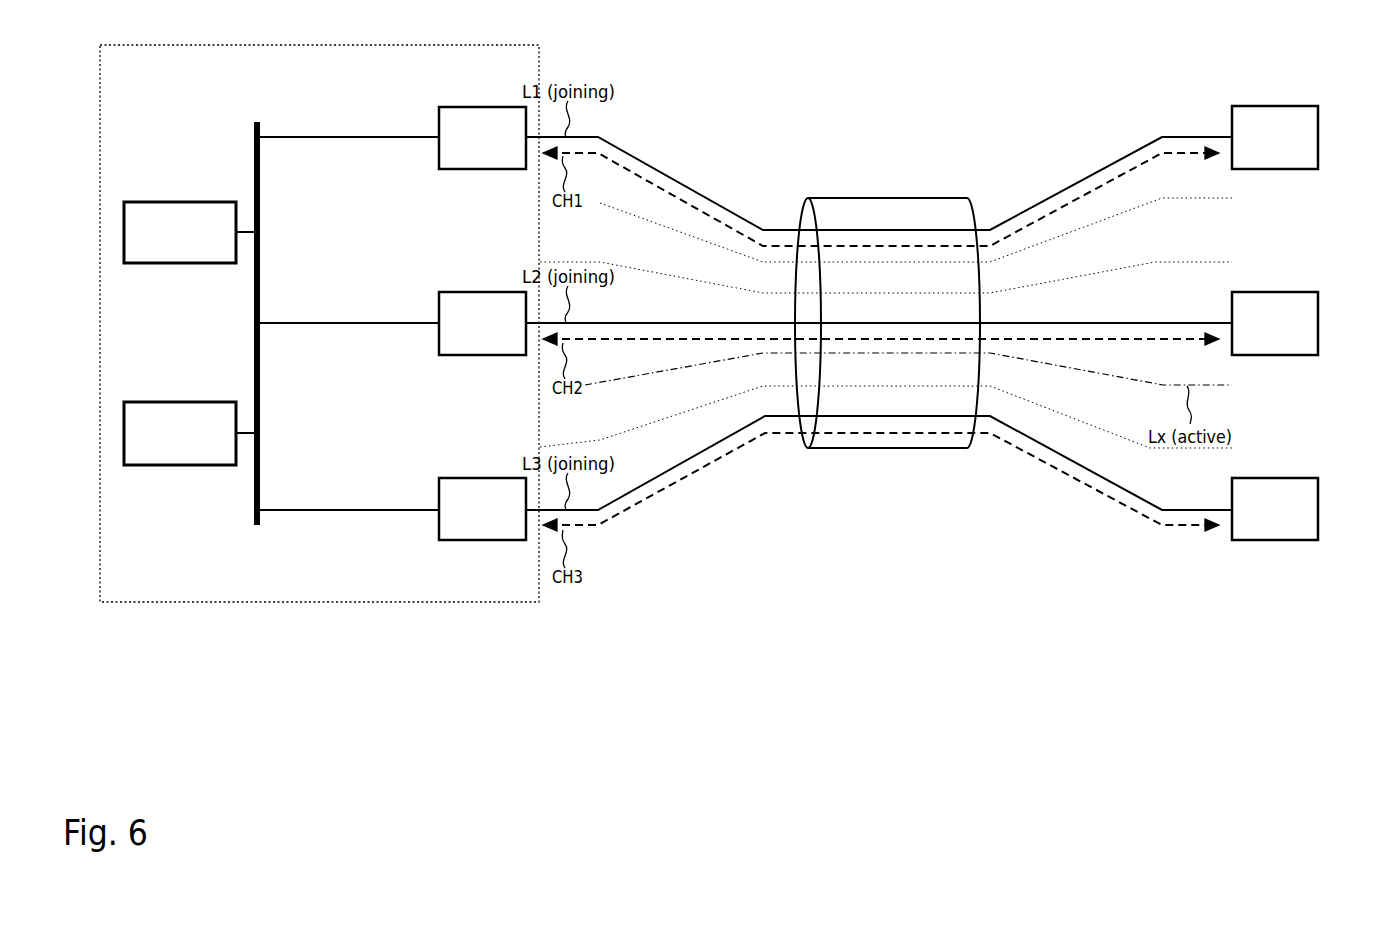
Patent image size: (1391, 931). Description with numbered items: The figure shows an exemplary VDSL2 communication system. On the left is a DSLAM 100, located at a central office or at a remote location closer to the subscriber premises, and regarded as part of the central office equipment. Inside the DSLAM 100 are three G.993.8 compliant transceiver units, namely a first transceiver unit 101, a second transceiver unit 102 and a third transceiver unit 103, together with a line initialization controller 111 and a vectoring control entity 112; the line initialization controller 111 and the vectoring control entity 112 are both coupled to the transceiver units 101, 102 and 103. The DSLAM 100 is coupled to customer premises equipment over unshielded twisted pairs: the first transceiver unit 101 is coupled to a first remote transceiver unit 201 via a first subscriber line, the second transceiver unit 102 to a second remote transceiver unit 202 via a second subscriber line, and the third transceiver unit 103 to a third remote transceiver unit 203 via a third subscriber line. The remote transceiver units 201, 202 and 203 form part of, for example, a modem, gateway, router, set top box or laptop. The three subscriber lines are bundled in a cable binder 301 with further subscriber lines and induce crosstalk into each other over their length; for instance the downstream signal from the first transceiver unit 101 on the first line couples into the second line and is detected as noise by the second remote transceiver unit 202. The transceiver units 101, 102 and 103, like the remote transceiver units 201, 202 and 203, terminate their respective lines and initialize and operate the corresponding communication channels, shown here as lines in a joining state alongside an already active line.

The DSLAM 100 is at (100, 602).
The first transceiver unit 101 is at (479, 107).
The second transceiver unit 102 is at (479, 292).
The third transceiver unit 103 is at (478, 540).
The line initialization controller 111 is at (124, 229).
The vectoring control entity 112 is at (124, 429).
The first remote transceiver unit 201 is at (1318, 169).
The second remote transceiver unit 202 is at (1318, 355).
The third remote transceiver unit 203 is at (1318, 540).
The cable binder 301 is at (881, 198).